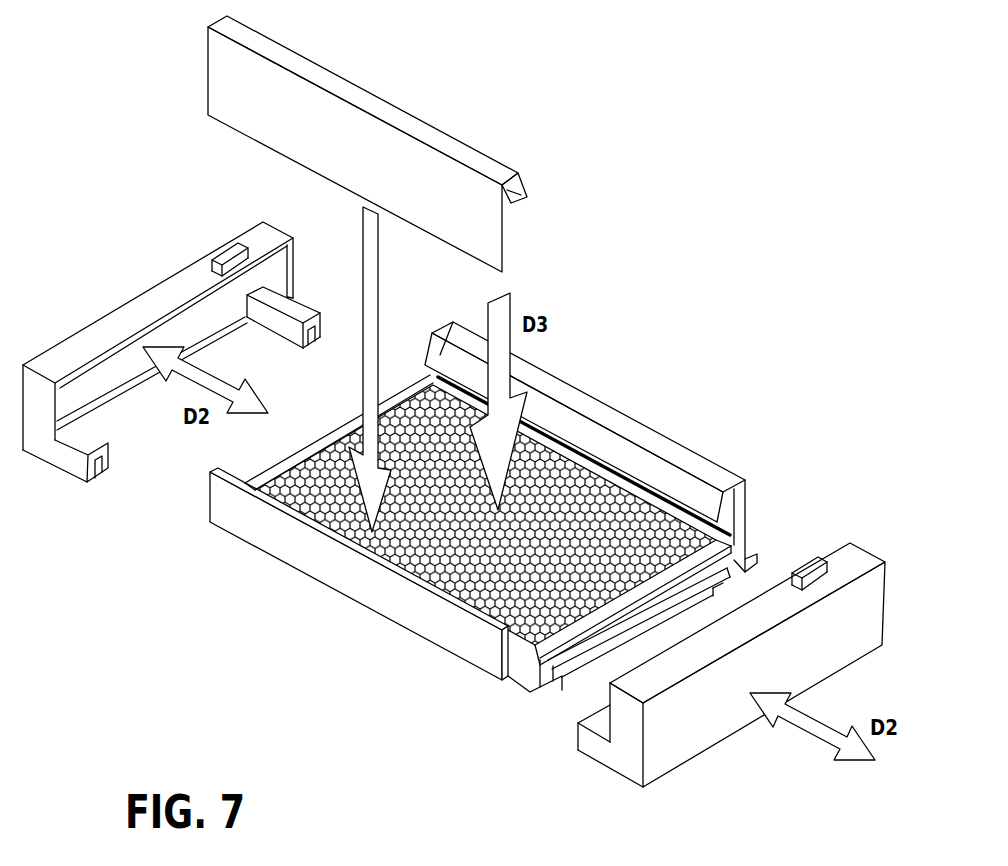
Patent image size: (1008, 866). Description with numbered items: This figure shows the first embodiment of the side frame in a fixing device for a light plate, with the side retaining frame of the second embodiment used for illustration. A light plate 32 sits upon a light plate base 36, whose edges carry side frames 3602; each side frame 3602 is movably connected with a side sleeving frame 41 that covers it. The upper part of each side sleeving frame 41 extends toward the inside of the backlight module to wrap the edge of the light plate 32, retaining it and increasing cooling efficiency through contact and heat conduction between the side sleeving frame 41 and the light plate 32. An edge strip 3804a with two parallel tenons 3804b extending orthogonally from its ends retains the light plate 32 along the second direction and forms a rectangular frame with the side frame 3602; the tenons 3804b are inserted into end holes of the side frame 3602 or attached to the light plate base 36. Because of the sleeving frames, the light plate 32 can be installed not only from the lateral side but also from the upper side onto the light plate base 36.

The side sleeving frame 41 is at (262, 133).
The light plate 32 is at (650, 497).
The light plate base 36 is at (283, 568).
The side frame 3602 is at (407, 613).
The edge strip 3804a is at (705, 730).
The tenon 3804b is at (77, 441).